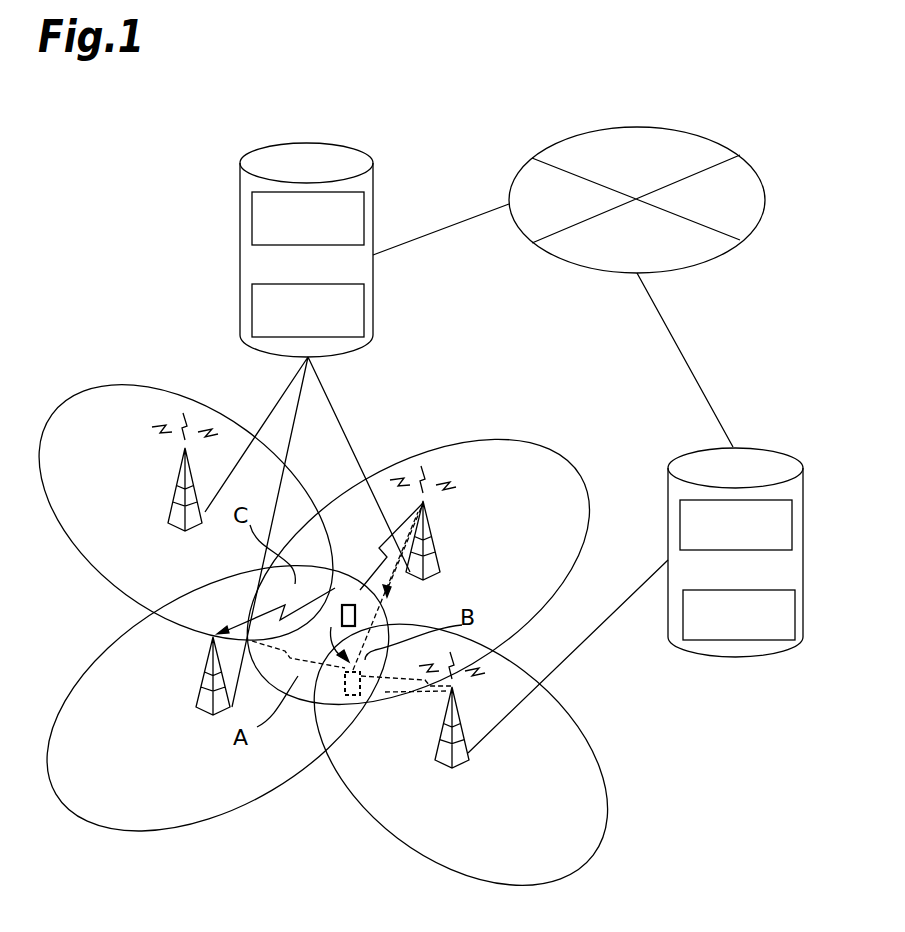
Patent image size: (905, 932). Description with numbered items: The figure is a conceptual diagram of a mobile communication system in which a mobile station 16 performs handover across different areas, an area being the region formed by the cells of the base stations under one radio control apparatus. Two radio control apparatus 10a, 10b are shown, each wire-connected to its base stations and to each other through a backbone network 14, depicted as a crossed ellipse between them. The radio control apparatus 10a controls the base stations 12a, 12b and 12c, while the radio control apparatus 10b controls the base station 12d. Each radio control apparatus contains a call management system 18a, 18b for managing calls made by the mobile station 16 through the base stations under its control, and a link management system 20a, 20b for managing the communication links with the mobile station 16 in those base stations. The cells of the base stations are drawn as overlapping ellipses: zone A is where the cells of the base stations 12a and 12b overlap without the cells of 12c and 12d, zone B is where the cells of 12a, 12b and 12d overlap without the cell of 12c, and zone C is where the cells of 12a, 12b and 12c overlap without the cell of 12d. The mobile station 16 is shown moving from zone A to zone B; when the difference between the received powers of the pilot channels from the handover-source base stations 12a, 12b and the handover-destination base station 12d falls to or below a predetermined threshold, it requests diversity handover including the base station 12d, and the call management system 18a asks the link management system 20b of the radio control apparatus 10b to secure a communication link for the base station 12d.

The radio control apparatus 10a is at (282, 229).
The radio control apparatus 10b is at (716, 529).
The base station 12a is at (198, 672).
The base station 12b is at (436, 535).
The base station 12c is at (168, 478).
The base station 12d is at (440, 740).
The backbone network 14 is at (632, 128).
The mobile station 16 is at (356, 614).
The call management system 18a is at (252, 223).
The call management system 18b is at (680, 525).
The link management system 20a is at (252, 310).
The link management system 20b is at (683, 628).